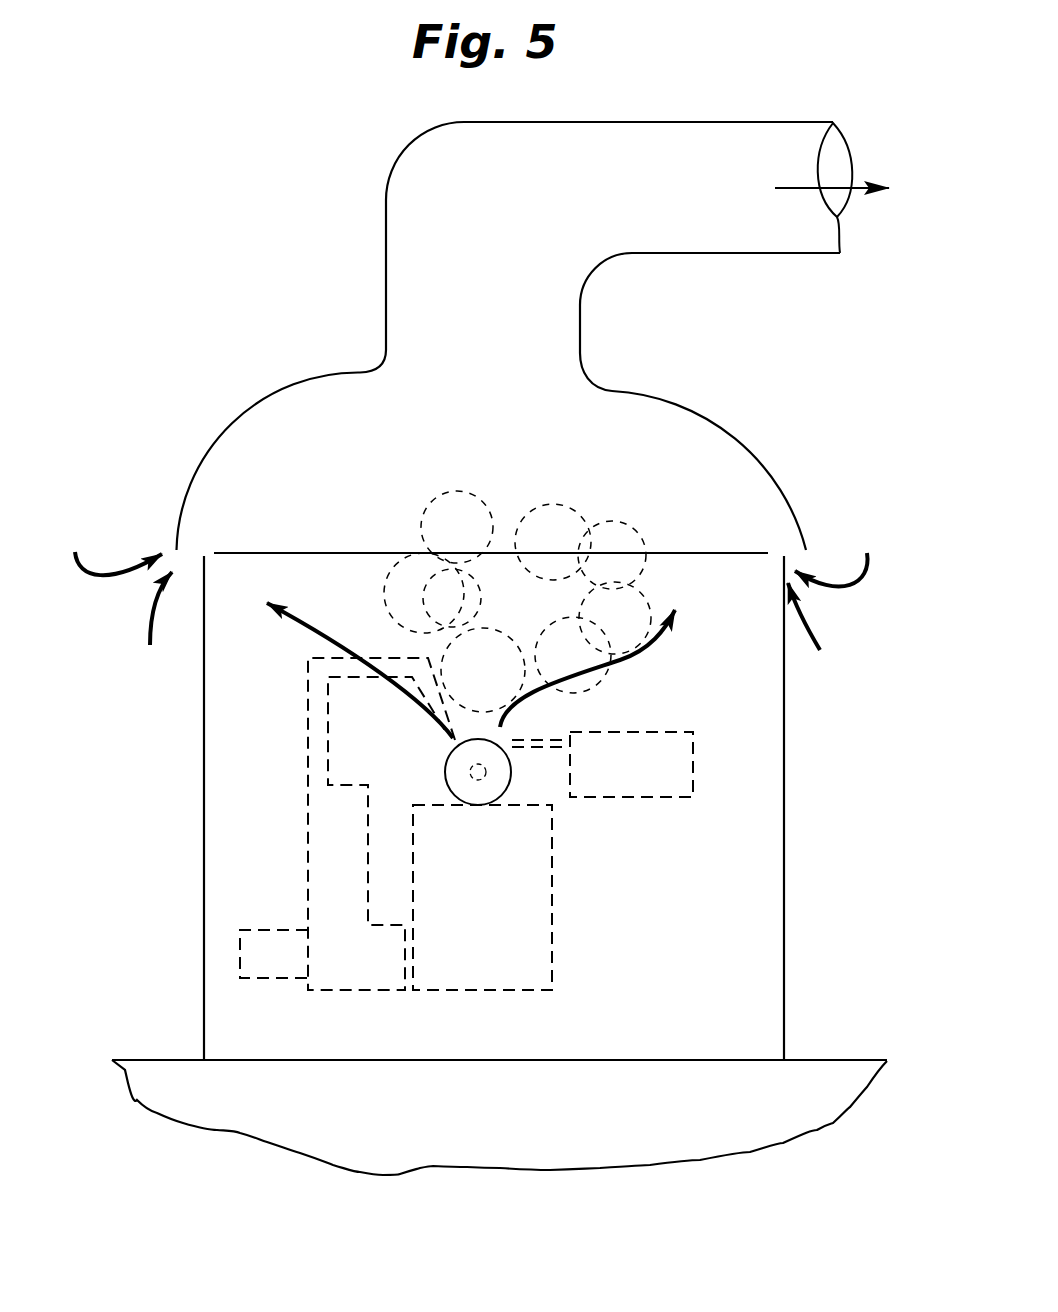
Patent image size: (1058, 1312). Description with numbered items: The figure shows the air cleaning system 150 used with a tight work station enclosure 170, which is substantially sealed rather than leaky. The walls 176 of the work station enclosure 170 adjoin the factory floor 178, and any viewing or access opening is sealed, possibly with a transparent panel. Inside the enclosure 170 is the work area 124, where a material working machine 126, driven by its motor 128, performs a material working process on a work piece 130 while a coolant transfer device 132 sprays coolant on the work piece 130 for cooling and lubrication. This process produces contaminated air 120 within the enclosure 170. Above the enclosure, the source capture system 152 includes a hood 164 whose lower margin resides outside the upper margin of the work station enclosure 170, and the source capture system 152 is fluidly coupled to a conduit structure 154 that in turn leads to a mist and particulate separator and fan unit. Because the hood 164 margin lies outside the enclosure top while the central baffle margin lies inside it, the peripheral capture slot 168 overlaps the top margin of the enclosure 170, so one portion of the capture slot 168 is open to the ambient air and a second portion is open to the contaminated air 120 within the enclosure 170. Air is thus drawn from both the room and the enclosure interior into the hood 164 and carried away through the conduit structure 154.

The contaminated air 120 is at (487, 622).
The work area 124 is at (490, 710).
The material working machine 126 is at (320, 848).
The motor 128 is at (270, 927).
The work piece 130 is at (506, 780).
The coolant transfer device 132 is at (670, 779).
The air cleaning system 150 is at (347, 217).
The source capture system 152 is at (336, 381).
The conduit structure 154 is at (577, 120).
The hood 164 is at (700, 416).
The peripheral capture slot 168 is at (198, 543).
The work station enclosure 170 is at (203, 763).
The walls 176 is at (203, 944).
The factory floor 178 is at (176, 1058).